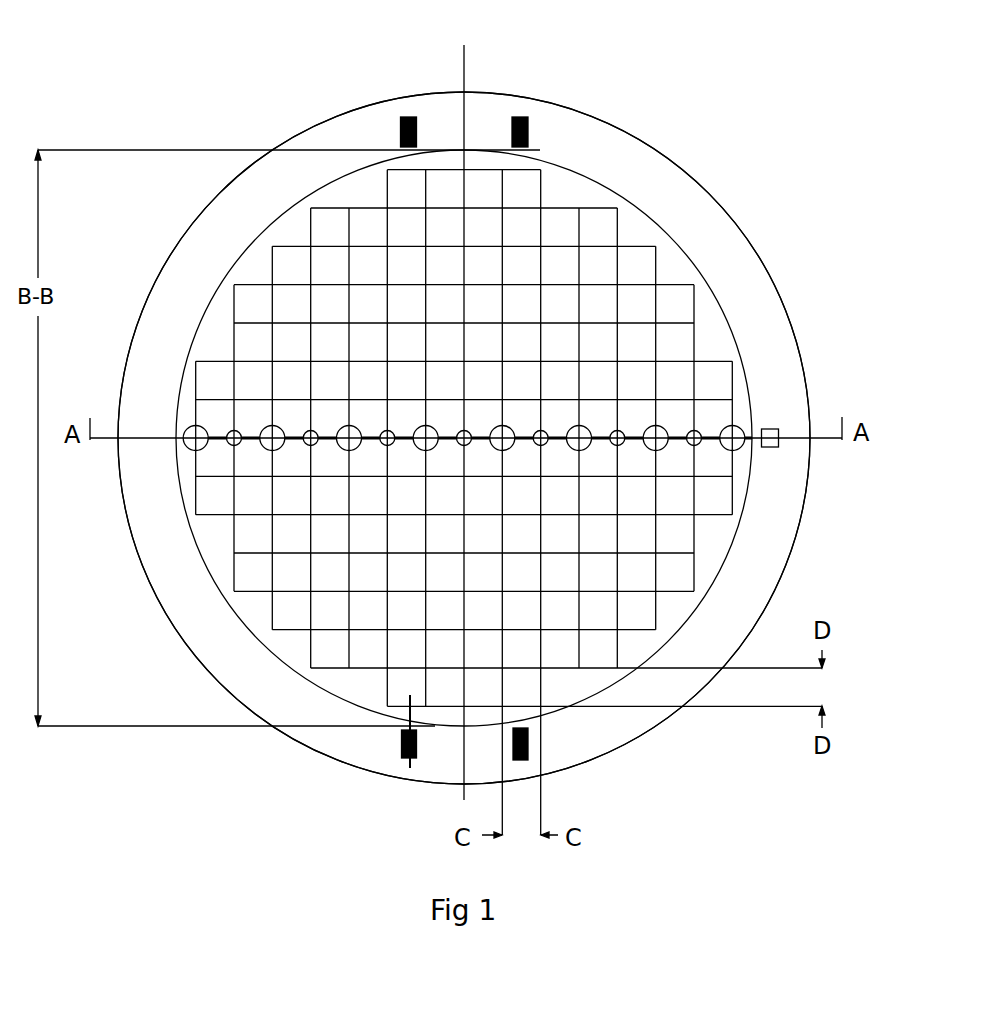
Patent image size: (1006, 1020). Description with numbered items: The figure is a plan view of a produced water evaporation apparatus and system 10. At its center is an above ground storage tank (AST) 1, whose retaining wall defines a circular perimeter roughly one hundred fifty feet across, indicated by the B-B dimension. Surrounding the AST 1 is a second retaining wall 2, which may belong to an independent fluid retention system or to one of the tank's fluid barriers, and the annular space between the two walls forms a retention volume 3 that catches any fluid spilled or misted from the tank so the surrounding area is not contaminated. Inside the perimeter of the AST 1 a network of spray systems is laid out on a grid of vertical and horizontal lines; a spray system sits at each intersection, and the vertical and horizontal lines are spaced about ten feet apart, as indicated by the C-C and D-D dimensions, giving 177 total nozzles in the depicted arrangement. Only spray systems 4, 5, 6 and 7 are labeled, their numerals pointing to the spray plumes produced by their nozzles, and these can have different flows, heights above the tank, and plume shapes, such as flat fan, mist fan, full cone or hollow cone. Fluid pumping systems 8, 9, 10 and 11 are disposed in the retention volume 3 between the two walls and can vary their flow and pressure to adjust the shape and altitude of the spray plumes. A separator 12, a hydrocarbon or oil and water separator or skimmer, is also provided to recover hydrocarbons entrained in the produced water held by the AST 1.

The above ground storage tank 1 is at (673, 233).
The second retaining wall 2 is at (799, 344).
The retention volume 3 is at (779, 385).
The spray system 4 is at (200, 425).
The spray system 5 is at (237, 445).
The spray system 6 is at (282, 425).
The spray system 7 is at (315, 445).
The fluid pumping system 8 is at (402, 117).
The fluid pumping system 9 is at (527, 117).
The produced water evaporation apparatus and system 10 is at (402, 758).
The fluid pumping system 11 is at (528, 760).
The separator 12 is at (779, 447).
The spray systems count 177 is at (698, 320).